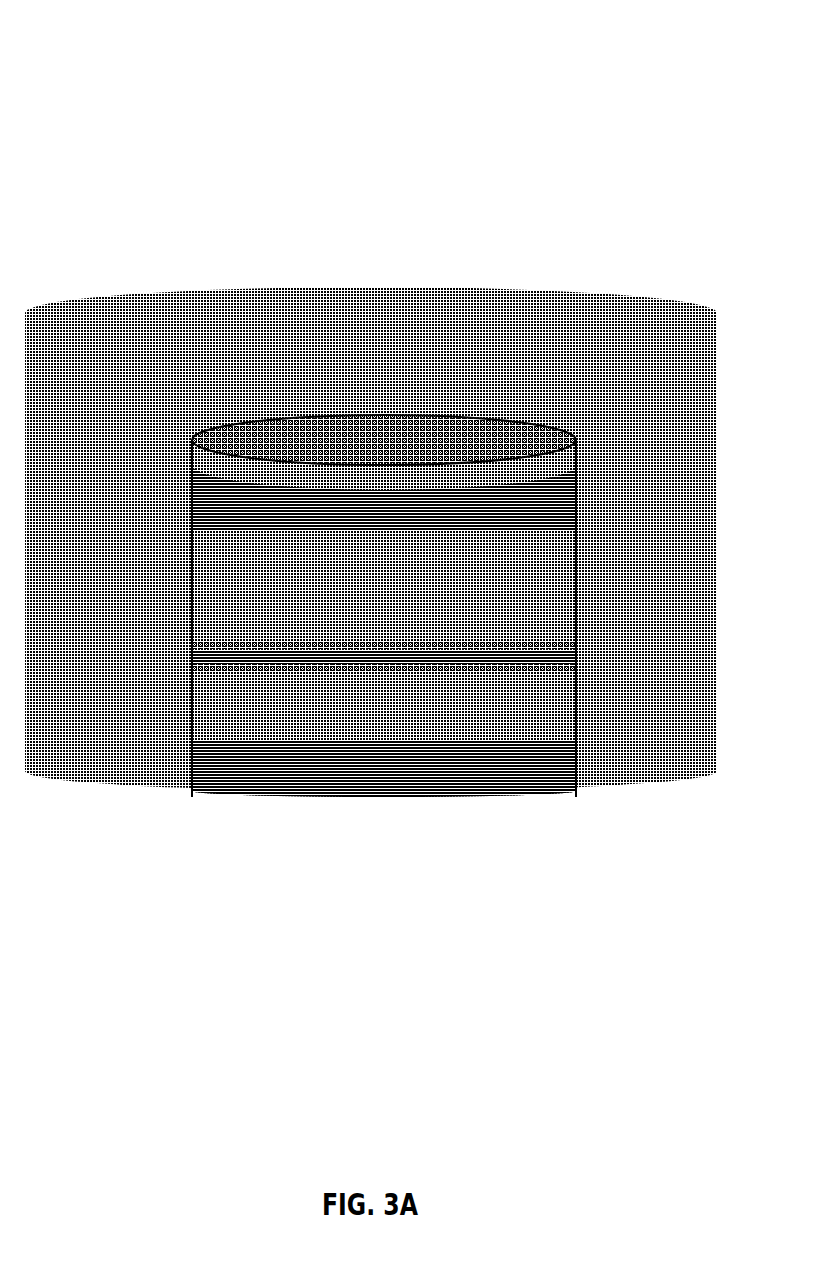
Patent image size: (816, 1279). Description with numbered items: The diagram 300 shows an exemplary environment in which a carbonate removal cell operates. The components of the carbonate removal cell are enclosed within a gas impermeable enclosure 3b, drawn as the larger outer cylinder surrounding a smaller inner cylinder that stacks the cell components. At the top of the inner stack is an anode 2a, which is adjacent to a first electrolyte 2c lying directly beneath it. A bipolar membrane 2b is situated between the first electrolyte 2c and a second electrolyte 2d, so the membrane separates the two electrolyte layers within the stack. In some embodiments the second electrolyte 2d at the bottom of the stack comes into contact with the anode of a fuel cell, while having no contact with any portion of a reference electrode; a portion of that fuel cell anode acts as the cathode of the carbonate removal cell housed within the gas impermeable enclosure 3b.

The diagram 300 is at (362, 32).
The gas impermeable enclosure 3b is at (371, 539).
The anode 2a is at (460, 452).
The bipolar membrane 2b is at (577, 655).
The first electrolyte 2c is at (384, 618).
The second electrolyte 2d is at (384, 734).